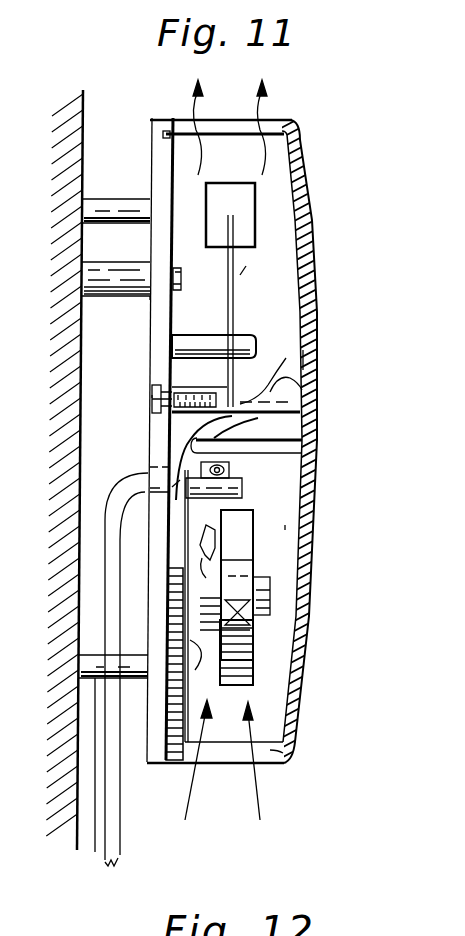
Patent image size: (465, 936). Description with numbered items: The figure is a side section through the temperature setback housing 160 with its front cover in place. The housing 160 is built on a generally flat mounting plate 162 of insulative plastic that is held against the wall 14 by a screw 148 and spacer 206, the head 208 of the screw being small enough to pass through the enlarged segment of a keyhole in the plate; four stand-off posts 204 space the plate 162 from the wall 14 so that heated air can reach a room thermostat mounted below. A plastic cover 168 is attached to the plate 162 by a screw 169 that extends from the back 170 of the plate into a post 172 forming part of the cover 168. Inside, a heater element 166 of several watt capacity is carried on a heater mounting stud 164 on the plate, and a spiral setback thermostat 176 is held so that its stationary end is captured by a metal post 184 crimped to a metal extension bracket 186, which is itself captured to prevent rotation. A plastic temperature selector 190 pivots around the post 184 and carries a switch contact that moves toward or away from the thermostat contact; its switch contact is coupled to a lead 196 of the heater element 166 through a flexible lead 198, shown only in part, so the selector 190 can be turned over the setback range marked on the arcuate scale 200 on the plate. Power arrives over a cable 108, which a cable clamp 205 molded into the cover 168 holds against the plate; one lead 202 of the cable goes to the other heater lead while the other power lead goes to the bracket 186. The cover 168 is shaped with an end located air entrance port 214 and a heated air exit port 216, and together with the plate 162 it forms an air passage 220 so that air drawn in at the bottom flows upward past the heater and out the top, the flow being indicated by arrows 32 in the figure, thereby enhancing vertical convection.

The wall 14 is at (63, 840).
The air flow arrows 32 is at (254, 108).
The cable 108 is at (112, 818).
The screw 148 is at (110, 262).
The temperature setback housing 160 is at (320, 177).
The mounting plate 162 is at (156, 438).
The heater mounting stud 164 is at (246, 335).
The heater element 166 is at (243, 225).
The cover 168 is at (312, 362).
The screw 169 is at (152, 395).
The back 170 is at (156, 357).
The post 172 is at (305, 386).
The setback thermostat 176 is at (257, 670).
The metal post 184 is at (266, 595).
The metal extension bracket 186 is at (250, 522).
The temperature selector 190 is at (200, 645).
The lead 196 is at (264, 270).
The lead 198 is at (283, 352).
The arcuate scale 200 is at (195, 710).
The lead 202 is at (230, 468).
The stand-off post 204 is at (110, 199).
The cable clamp 205 is at (290, 448).
The spacer 206 is at (122, 298).
The head 208 is at (181, 280).
The air entrance port 214 is at (268, 752).
The heated air exit port 216 is at (296, 122).
The air passage 220 is at (278, 526).